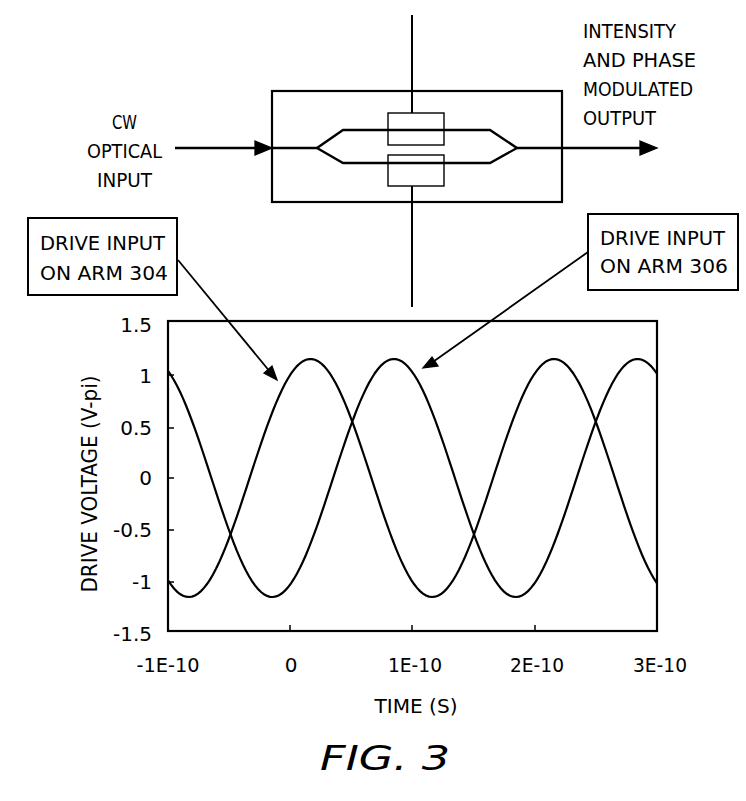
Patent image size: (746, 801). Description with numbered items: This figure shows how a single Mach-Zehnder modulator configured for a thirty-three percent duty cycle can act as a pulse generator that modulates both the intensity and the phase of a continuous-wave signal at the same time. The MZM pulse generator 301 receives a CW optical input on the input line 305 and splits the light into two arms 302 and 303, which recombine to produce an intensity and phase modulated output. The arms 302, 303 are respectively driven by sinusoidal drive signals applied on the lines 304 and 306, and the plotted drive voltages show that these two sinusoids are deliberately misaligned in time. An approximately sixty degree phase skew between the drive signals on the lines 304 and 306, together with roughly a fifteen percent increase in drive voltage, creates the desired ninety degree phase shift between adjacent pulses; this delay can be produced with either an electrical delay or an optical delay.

The MZM pulse generator 301 is at (495, 91).
The first arm 302 is at (358, 130).
The second arm 303 is at (358, 164).
The drive line 304 is at (412, 50).
The input line 305 is at (212, 150).
The drive line 306 is at (412, 257).